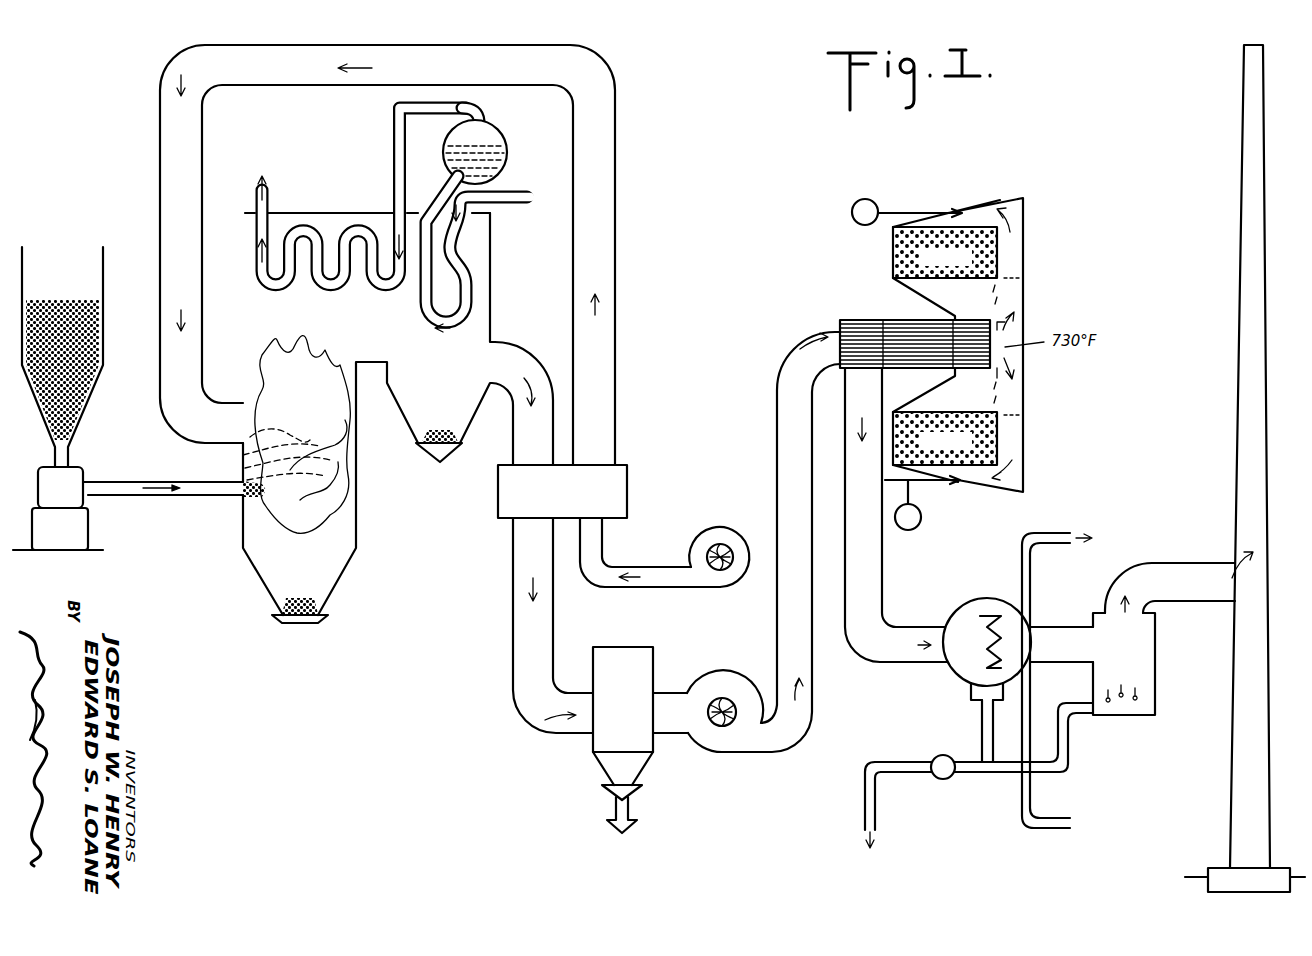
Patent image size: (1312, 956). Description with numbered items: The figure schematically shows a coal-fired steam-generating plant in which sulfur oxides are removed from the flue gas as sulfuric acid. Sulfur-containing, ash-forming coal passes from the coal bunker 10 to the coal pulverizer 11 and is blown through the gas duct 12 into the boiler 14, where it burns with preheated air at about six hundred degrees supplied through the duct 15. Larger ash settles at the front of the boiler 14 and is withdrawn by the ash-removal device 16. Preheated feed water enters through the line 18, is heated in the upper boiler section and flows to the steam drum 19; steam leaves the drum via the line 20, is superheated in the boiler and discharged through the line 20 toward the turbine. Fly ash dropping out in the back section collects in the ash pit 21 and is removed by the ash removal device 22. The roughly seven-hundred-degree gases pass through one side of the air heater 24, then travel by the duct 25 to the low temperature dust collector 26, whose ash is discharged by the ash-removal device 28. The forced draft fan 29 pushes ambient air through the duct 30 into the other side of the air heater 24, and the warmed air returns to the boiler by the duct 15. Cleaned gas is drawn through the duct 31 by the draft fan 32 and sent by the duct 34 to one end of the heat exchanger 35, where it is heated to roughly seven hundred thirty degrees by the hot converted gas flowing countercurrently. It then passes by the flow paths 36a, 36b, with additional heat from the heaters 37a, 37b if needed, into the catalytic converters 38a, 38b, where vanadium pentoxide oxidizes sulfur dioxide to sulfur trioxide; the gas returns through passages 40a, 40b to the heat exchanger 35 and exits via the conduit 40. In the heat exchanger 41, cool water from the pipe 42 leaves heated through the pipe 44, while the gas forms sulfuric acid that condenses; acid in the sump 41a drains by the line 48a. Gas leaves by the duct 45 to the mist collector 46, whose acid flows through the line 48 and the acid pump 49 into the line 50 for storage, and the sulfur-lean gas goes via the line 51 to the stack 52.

The coal bunker 10 is at (103, 337).
The coal pulverizer 11 is at (83, 473).
The gas duct 12 is at (140, 482).
The boiler 14 is at (382, 416).
The duct 15 is at (160, 406).
The ash-removal device 16 is at (322, 617).
The line 18 is at (505, 194).
The steam drum 19 is at (492, 131).
The line 20 is at (393, 128).
The ash pit 21 is at (470, 415).
The ash removal device 22 is at (456, 448).
The air heater 24 is at (628, 479).
The duct 25 is at (510, 629).
The low temperature dust collector 26 is at (655, 666).
The ash-removal device 28 is at (640, 792).
The forced draft fan 29 is at (692, 549).
The duct 30 is at (602, 551).
The duct 31 is at (665, 734).
The draft fan 32 is at (726, 752).
The duct 34 is at (777, 420).
The heat exchanger 35 is at (850, 320).
The flow path 36a is at (1025, 242).
The flow path 36b is at (1025, 447).
The heater 37a is at (853, 206).
The heater 37b is at (921, 516).
The catalytic converter 38a is at (893, 232).
The catalytic converter 38b is at (919, 490).
The conduit 40 is at (883, 570).
The converter upper gas passage 40a is at (1005, 312).
The converter lower gas passage 40b is at (1000, 391).
The heat exchanger 41 is at (945, 613).
The sump 41a is at (966, 694).
The pipe 42 is at (1032, 791).
The pipe 44 is at (1035, 530).
The duct 45 is at (1050, 626).
The mist collector 46 is at (1157, 666).
The line 48 is at (1072, 699).
The line 48a is at (980, 709).
The acid pump 49 is at (944, 780).
The line 50 is at (877, 802).
The line 51 is at (1192, 596).
The stack 52 is at (1266, 313).